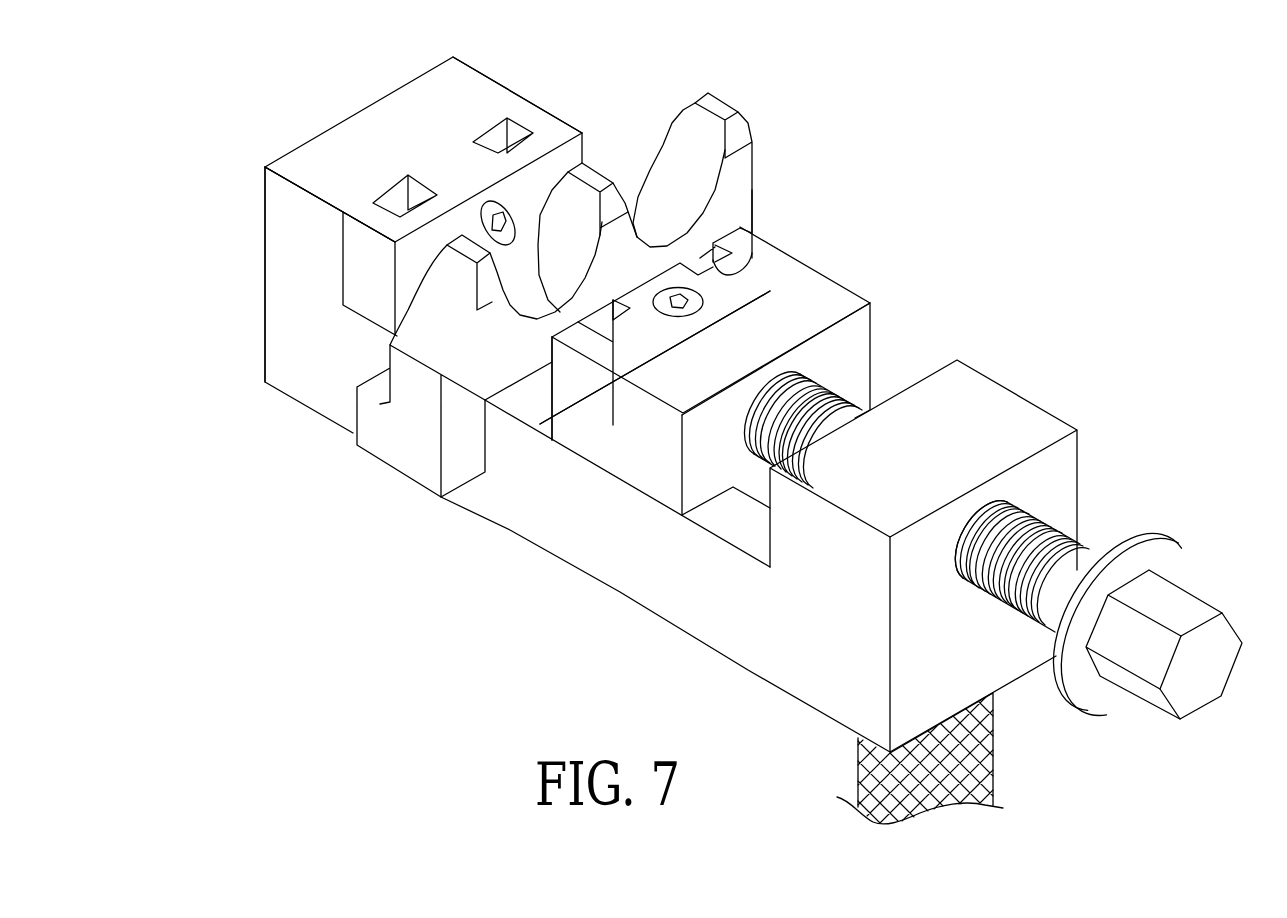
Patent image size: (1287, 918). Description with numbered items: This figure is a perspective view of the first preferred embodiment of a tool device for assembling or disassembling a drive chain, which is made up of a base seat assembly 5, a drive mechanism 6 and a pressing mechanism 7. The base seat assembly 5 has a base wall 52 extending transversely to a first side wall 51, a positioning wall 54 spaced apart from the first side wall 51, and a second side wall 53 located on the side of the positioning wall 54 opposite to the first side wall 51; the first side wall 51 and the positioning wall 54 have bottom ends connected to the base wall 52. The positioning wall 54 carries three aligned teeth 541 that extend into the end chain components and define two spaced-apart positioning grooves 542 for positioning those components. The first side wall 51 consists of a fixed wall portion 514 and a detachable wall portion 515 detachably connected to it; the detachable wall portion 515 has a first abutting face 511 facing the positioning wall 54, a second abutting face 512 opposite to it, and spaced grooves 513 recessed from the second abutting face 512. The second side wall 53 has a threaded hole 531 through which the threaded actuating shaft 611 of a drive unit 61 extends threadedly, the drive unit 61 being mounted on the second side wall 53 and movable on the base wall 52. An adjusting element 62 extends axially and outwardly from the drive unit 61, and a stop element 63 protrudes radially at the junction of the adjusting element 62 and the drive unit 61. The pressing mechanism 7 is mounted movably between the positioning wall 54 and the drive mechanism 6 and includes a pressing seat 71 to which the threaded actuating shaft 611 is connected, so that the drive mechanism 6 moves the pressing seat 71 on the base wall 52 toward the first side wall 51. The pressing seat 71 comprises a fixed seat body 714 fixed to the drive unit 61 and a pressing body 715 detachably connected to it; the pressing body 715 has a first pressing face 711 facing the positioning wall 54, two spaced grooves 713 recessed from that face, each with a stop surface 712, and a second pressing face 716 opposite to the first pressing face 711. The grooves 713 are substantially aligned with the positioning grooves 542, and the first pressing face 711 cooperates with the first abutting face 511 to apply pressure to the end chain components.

The base seat assembly 5 is at (304, 421).
The first side wall 51 is at (300, 63).
The first abutting face 511 is at (560, 150).
The second abutting face 512 is at (433, 160).
The spaced grooves 513 is at (493, 135).
The fixed wall portion 514 is at (330, 150).
The detachable wall portion 515 is at (340, 197).
The base wall 52 is at (603, 555).
The second side wall 53 is at (1025, 430).
The threaded hole 531 is at (988, 500).
The positioning wall 54 is at (455, 470).
The teeth 541 is at (613, 198).
The positioning grooves 542 is at (523, 227).
The drive mechanism 6 is at (1197, 560).
The drive unit 61 is at (1064, 526).
The threaded actuating shaft 611 is at (1027, 527).
The adjusting element 62 is at (1190, 693).
The stop element 63 is at (1095, 692).
The pressing mechanism 7 is at (802, 243).
The pressing seat 71 is at (958, 196).
The first pressing face 711 is at (752, 190).
The stop surface 712 is at (749, 244).
The spaced grooves 713 is at (755, 237).
The fixed seat body 714 is at (835, 303).
The pressing body 715 is at (790, 266).
The second pressing face 716 is at (772, 240).